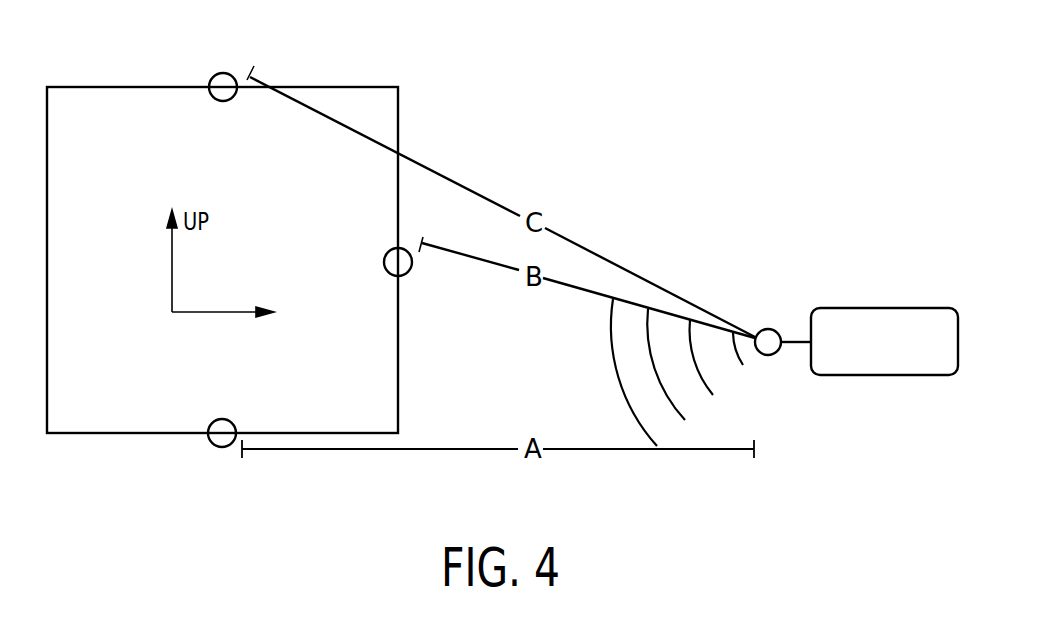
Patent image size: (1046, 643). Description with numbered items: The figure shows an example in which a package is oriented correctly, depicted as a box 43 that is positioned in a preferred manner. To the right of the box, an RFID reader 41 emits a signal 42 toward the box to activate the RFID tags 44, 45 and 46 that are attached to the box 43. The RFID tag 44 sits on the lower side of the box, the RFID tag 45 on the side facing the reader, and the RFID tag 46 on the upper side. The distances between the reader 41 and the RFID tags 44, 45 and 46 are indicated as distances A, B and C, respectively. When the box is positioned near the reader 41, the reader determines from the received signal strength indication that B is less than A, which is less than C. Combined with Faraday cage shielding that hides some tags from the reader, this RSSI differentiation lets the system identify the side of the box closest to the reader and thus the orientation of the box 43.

The RFID reader 41 is at (883, 376).
The signal 42 is at (612, 340).
The box 43 is at (340, 86).
The RFID tag 44 is at (222, 447).
The RFID tag 45 is at (412, 263).
The RFID tag 46 is at (225, 72).